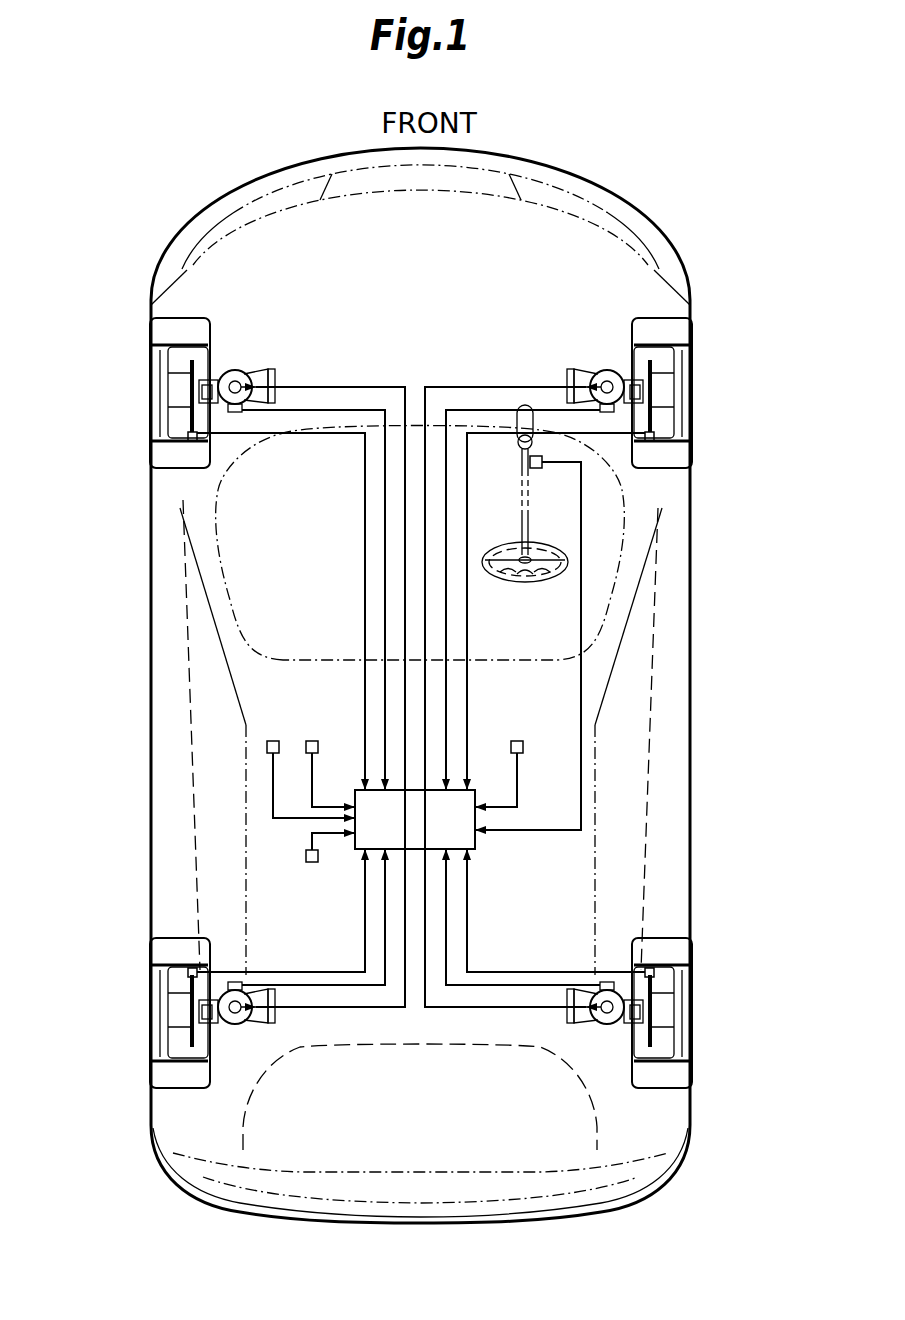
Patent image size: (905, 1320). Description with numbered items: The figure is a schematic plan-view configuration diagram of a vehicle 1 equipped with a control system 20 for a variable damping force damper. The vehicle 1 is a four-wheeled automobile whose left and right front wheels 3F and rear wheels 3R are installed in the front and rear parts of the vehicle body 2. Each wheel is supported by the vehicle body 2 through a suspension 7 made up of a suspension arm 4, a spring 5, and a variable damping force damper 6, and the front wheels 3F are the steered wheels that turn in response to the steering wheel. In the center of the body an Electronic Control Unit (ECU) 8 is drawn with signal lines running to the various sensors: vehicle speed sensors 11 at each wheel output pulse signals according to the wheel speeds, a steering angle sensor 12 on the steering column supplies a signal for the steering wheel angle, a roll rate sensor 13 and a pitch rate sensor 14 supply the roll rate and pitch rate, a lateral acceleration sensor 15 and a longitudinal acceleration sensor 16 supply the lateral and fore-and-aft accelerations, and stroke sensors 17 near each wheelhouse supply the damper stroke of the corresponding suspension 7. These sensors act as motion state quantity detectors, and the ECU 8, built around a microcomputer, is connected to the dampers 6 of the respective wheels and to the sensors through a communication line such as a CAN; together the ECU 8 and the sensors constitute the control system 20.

The vehicle 1 is at (200, 150).
The vehicle body 2 is at (608, 185).
The front wheels 3F is at (160, 330).
The rear wheels 3R is at (160, 1080).
The suspension arm 4 is at (215, 397).
The spring 5 is at (190, 385).
The variable damping force damper 6 is at (237, 372).
The suspension 7 is at (253, 362).
The Electronic Control Unit (ECU) 8 is at (466, 790).
The vehicle speed sensors 11 is at (192, 442).
The steering angle sensor 12 is at (538, 468).
The roll rate sensor 13 is at (517, 741).
The pitch rate sensor 14 is at (312, 741).
The lateral acceleration sensor 15 is at (273, 741).
The longitudinal acceleration sensor 16 is at (312, 862).
The stroke sensors 17 is at (236, 412).
The control system 20 is at (606, 824).